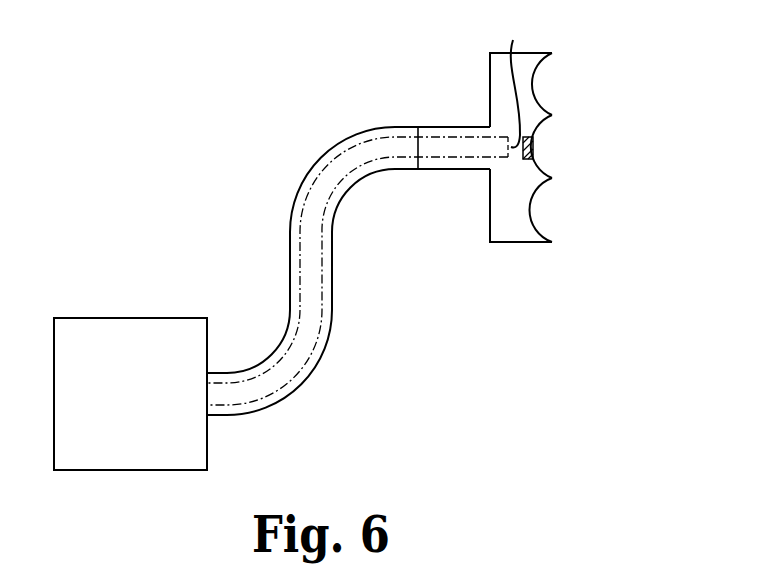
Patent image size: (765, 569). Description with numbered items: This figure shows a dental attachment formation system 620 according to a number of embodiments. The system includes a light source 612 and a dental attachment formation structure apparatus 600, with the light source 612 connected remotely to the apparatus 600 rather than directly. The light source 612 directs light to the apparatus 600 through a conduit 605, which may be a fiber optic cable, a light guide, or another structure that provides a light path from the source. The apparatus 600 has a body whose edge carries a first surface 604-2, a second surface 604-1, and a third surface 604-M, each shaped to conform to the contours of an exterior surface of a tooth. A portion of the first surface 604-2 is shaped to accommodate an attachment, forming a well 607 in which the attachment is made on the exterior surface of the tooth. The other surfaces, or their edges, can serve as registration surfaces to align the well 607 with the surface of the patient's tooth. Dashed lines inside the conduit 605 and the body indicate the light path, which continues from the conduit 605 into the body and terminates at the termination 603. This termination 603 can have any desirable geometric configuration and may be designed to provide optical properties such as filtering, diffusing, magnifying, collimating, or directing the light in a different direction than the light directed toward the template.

The dental attachment formation system 620 is at (156, 142).
The light source 612 is at (127, 318).
The conduit 605 is at (333, 310).
The dental attachment formation structure apparatus 600 is at (490, 80).
The light path termination 603 is at (518, 81).
The third surface 604-M is at (532, 82).
The first surface 604-2 is at (533, 157).
The second surface 604-1 is at (532, 208).
The well 607 is at (560, 143).